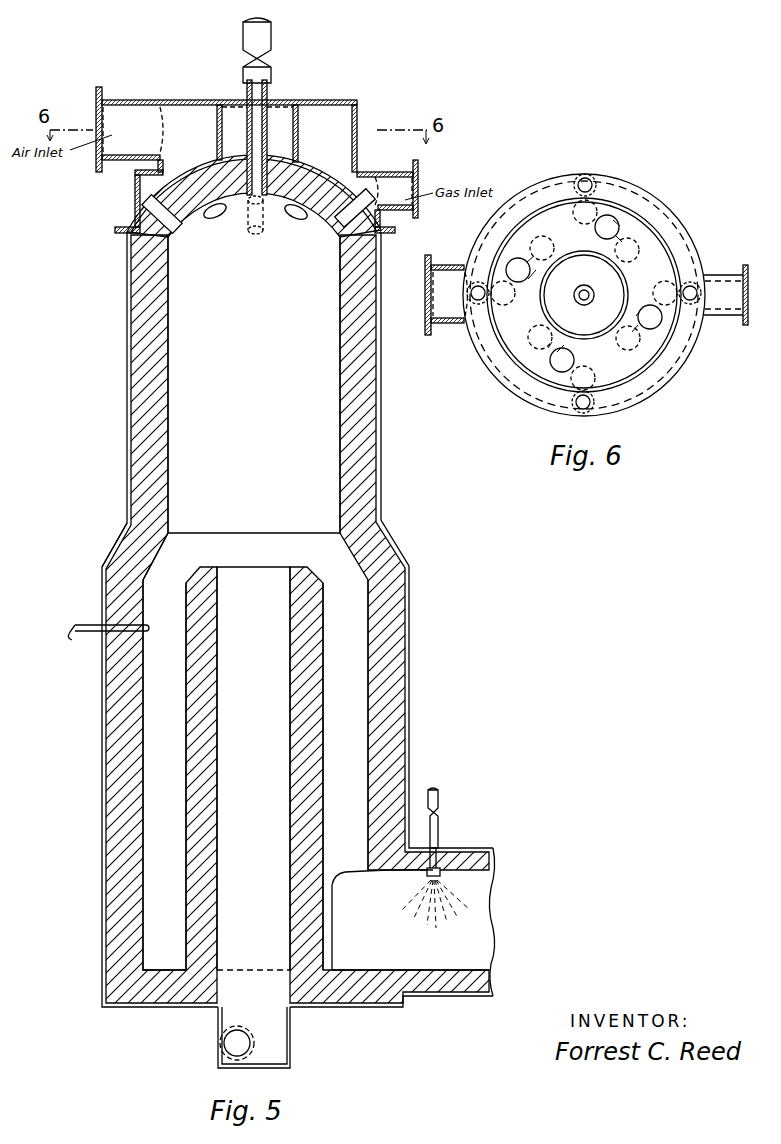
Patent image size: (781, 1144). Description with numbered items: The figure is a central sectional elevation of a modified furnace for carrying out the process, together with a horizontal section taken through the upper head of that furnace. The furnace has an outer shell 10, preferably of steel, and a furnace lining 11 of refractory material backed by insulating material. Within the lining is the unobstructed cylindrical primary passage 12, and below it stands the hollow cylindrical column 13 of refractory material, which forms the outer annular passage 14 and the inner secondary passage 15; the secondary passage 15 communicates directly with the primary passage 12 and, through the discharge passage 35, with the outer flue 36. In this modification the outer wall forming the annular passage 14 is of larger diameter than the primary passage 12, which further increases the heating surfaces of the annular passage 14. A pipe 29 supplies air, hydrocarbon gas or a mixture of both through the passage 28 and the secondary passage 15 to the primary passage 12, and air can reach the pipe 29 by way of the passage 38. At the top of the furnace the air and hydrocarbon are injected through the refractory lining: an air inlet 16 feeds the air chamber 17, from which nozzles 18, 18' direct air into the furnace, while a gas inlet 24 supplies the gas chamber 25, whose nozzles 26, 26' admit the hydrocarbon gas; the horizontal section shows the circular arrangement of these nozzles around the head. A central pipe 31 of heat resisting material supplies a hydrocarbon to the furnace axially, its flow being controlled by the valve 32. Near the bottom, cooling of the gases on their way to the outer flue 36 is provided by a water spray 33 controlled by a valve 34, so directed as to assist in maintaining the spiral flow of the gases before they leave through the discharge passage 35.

In FIG. 5, the outer shell 10 is at (102, 585).
In FIG. 5, the furnace lining 11 is at (135, 548).
In FIG. 5, the primary passage 12 is at (312, 418).
In FIG. 5, the hollow cylindrical column 13 is at (198, 705).
In FIG. 5, the annular passage 14 is at (350, 647).
In FIG. 5, the secondary passage 15 is at (275, 690).
In FIG. 5, the air inlet pipe 16 is at (97, 115).
In FIG. 6, the air inlet pipe 16 is at (440, 278).
In FIG. 5, the air chamber 17 is at (333, 145).
In FIG. 6, the air chamber 17 is at (660, 273).
In FIG. 5, the nozzle 18 is at (226, 218).
In FIG. 6, the nozzle 18 is at (521, 307).
In FIG. 5, the nozzle 18' is at (288, 220).
In FIG. 6, the nozzle 18' is at (643, 271).
In FIG. 5, the gas inlet flange 24 is at (420, 182).
In FIG. 6, the gas inlet flange 24 is at (745, 293).
In FIG. 5, the gas chamber 25 is at (363, 182).
In FIG. 5, the nozzle 26 is at (245, 230).
In FIG. 6, the nozzle 26 is at (603, 279).
In FIG. 5, the nozzle 26' is at (258, 226).
In FIG. 6, the nozzle 26' is at (601, 270).
In FIG. 5, the passage 28 is at (268, 988).
In FIG. 5, the pipe 29 is at (230, 1044).
In FIG. 5, the pipe 31 is at (268, 118).
In FIG. 6, the pipe 31 is at (578, 299).
In FIG. 5, the valve 32 is at (265, 62).
In FIG. 5, the water spray 33 is at (443, 873).
In FIG. 5, the valve 34 is at (440, 810).
In FIG. 5, the discharge passage 35 is at (355, 885).
In FIG. 5, the outer flue 36 is at (460, 957).
In FIG. 5, the air passage 38 is at (72, 632).